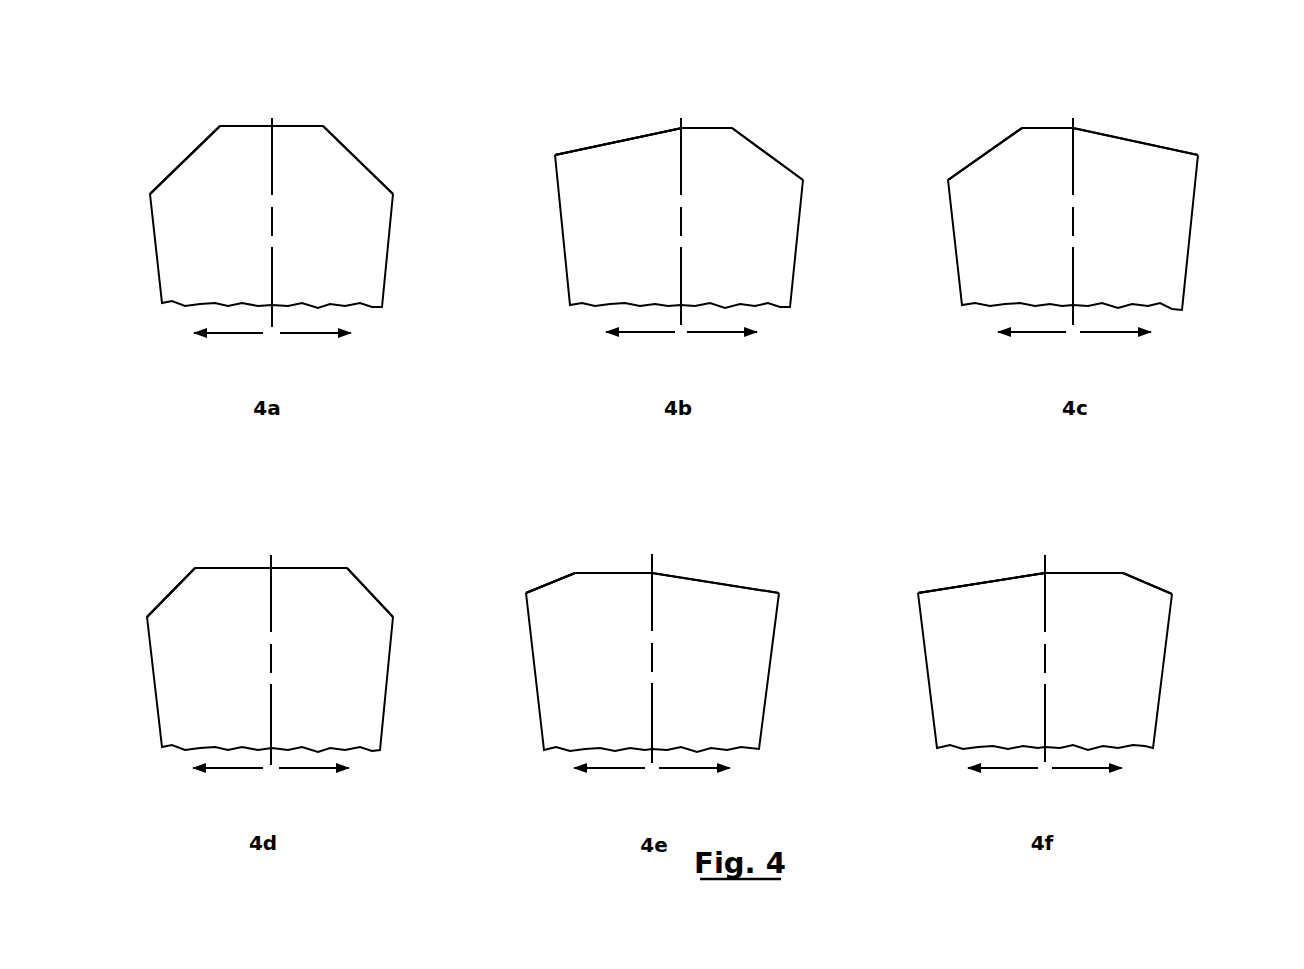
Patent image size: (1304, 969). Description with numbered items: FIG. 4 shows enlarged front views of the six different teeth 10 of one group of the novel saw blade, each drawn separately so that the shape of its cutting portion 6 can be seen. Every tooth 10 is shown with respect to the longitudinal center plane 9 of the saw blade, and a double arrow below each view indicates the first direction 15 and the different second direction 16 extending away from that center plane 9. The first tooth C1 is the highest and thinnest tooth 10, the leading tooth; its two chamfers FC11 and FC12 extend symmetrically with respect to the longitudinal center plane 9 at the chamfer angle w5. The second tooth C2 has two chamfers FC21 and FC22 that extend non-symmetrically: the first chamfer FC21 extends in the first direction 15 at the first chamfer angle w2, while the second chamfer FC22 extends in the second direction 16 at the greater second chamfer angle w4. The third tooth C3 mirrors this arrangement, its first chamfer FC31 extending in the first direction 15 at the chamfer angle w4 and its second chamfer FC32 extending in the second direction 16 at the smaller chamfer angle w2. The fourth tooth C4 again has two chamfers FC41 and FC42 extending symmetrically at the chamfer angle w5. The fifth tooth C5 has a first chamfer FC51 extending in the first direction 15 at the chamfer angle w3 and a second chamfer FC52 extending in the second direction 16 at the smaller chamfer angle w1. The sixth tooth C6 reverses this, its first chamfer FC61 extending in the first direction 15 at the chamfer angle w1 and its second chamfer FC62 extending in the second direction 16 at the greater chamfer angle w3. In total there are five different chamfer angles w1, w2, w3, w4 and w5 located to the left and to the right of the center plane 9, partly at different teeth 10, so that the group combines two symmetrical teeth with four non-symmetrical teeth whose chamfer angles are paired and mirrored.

The cutting portion 6 is at (252, 125).
The longitudinal center plane 9 is at (272, 142).
The tooth 10 is at (200, 131).
The first direction 15 is at (230, 335).
The second direction 16 is at (313, 335).
The first tooth C1 is at (273, 97).
The second tooth C2 is at (682, 99).
The third tooth C3 is at (1073, 99).
The fourth tooth C4 is at (270, 524).
The fifth tooth C5 is at (659, 527).
The sixth tooth C6 is at (1048, 524).
The first chamfer of first tooth FC11 is at (182, 163).
The second chamfer of first tooth FC12 is at (357, 158).
The first chamfer of second tooth FC21 is at (573, 148).
The second chamfer of second tooth FC22 is at (792, 157).
The first chamfer of third tooth FC31 is at (972, 163).
The second chamfer of third tooth FC32 is at (1182, 147).
The first chamfer of fourth tooth FC41 is at (182, 583).
The second chamfer of fourth tooth FC42 is at (357, 578).
The first chamfer of fifth tooth FC51 is at (537, 587).
The second chamfer of fifth tooth FC52 is at (761, 587).
The first chamfer of sixth tooth FC61 is at (932, 587).
The second chamfer of sixth tooth FC62 is at (1158, 585).
The chamfer angle w1 is at (716, 572).
The chamfer angle w2 is at (648, 126).
The chamfer angle w3 is at (571, 569).
The chamfer angle w4 is at (748, 127).
The chamfer angle w5 is at (142, 184).